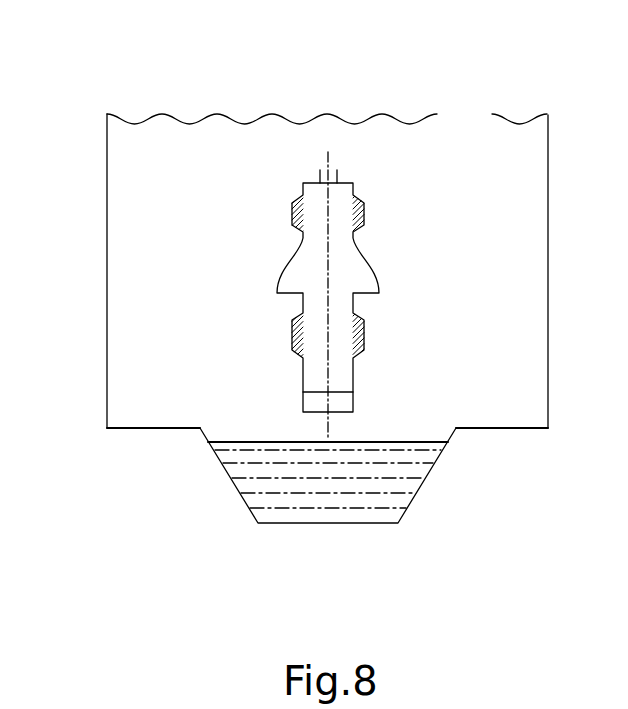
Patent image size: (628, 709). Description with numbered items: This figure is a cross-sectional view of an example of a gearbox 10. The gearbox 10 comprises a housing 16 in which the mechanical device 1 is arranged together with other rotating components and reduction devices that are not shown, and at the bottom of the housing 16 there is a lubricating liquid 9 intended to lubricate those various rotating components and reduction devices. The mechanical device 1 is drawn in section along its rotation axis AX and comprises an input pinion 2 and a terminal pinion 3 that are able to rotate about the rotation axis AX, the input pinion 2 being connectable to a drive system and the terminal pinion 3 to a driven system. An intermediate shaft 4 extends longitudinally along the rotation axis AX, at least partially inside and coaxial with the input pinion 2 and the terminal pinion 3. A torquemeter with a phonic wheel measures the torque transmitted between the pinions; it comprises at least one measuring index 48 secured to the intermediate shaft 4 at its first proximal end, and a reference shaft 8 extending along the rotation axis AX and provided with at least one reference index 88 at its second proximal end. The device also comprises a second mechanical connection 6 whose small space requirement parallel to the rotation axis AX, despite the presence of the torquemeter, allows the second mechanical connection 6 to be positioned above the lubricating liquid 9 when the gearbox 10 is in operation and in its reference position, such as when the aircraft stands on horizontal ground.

The mechanical device 1 is at (443, 152).
The input pinion 2 is at (312, 213).
The terminal pinion 3 is at (312, 333).
The intermediate shaft 4 is at (272, 157).
The measuring index 48 is at (318, 178).
The second mechanical connection 6 is at (343, 400).
The reference shaft 8 is at (381, 125).
The reference index 88 is at (338, 178).
The lubricating liquid 9 is at (258, 478).
The gearbox 10 is at (498, 482).
The housing 16 is at (157, 428).
The rotation axis AX is at (326, 424).